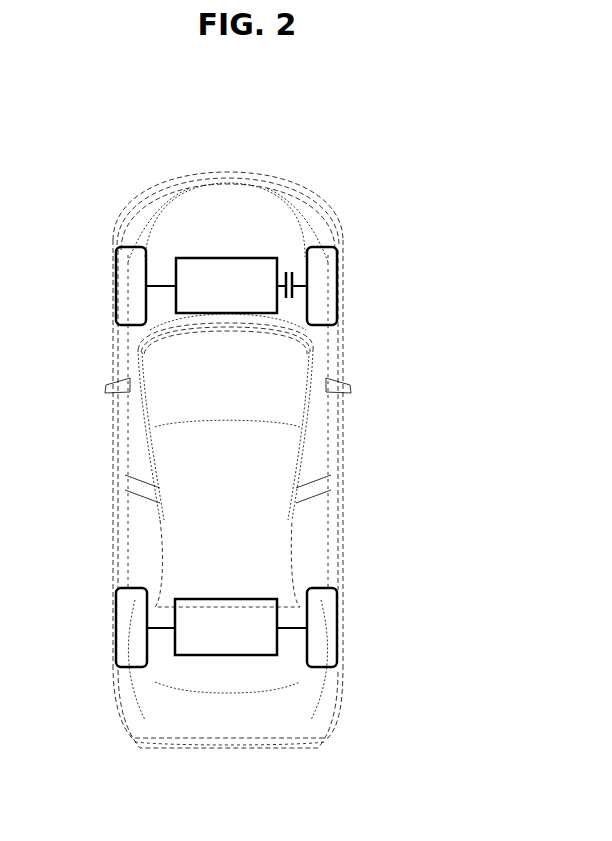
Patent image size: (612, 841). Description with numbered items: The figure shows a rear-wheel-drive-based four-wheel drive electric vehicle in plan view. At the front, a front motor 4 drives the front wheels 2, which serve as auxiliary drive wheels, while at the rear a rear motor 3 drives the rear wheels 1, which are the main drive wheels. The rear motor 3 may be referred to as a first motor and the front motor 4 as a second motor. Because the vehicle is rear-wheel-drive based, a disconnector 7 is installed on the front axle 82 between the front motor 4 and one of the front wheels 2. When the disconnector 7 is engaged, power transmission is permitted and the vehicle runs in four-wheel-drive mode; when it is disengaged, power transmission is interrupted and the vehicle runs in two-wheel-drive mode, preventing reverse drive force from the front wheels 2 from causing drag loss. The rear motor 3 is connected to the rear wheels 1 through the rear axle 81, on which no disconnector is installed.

The rear wheels 1 is at (116, 632).
The front wheels 2 is at (338, 270).
The rear motor 3 is at (228, 655).
The front motor 4 is at (225, 258).
The disconnector 7 is at (290, 272).
The rear axle 81 is at (165, 628).
The front axle 82 is at (162, 286).